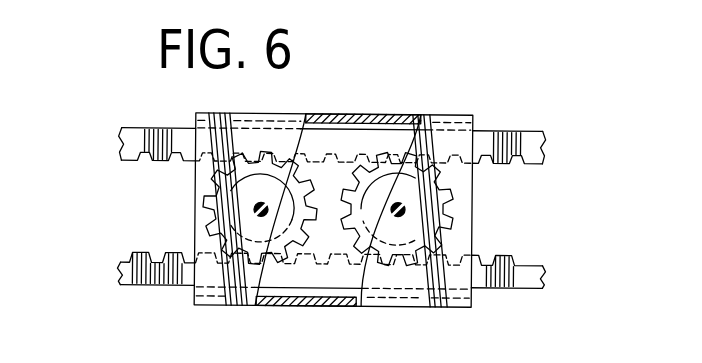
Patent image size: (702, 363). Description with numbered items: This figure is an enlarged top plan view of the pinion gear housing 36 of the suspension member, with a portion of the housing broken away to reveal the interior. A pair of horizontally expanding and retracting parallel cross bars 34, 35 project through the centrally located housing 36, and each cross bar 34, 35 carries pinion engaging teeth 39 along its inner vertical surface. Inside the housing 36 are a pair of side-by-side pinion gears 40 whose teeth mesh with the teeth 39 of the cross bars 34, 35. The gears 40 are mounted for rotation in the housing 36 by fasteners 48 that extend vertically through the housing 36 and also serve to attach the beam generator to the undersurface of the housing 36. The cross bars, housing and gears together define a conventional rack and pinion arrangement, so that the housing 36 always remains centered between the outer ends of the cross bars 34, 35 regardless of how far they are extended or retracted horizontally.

The cross bar 34 is at (158, 287).
The cross bar 35 is at (500, 130).
The pinion gear housing 36 is at (278, 112).
The pinion engaging teeth 39 is at (158, 166).
The pinion gears 40 is at (345, 203).
The fasteners 48 is at (256, 210).